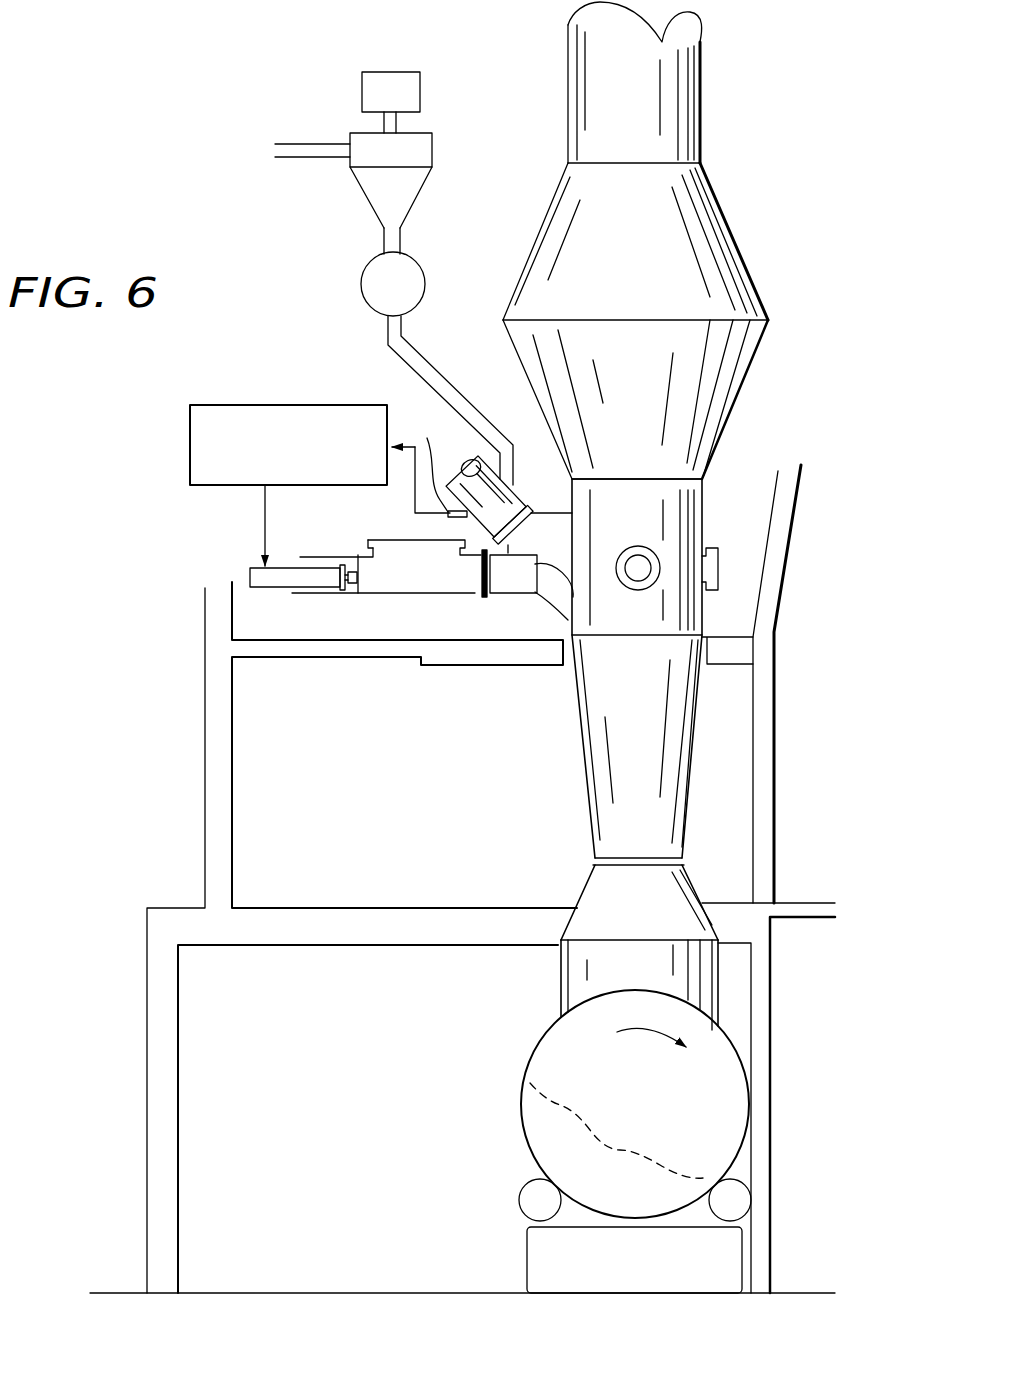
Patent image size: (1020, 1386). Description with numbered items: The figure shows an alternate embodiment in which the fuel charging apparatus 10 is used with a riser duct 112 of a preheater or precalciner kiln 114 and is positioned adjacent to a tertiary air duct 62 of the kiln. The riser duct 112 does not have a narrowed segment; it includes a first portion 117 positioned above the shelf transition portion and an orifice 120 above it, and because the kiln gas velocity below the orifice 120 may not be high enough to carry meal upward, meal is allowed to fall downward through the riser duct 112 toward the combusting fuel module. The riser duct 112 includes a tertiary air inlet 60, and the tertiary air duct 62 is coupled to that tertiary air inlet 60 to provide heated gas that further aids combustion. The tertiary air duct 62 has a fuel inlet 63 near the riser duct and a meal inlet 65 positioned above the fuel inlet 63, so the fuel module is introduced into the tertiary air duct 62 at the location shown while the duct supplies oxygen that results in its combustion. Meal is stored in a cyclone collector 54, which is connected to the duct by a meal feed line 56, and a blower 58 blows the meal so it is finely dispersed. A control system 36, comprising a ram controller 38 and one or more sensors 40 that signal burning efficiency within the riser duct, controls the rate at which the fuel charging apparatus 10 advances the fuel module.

The preheater or precalciner kiln 114 is at (186, 204).
The riser duct 112 is at (714, 508).
The tertiary air inlet 60 is at (570, 523).
The orifice 120 is at (590, 866).
The first portion 117 is at (552, 990).
The cyclone collector 54 is at (414, 198).
The blower 58 is at (424, 288).
The meal feed line 56 is at (445, 390).
The ram controller 38 is at (253, 408).
The control system 36 is at (323, 385).
The sensors 40 is at (429, 464).
The tertiary air duct 62 is at (464, 480).
The meal inlet 65 is at (512, 482).
The fuel charging apparatus 10 is at (439, 601).
The fuel inlet 63 is at (575, 597).